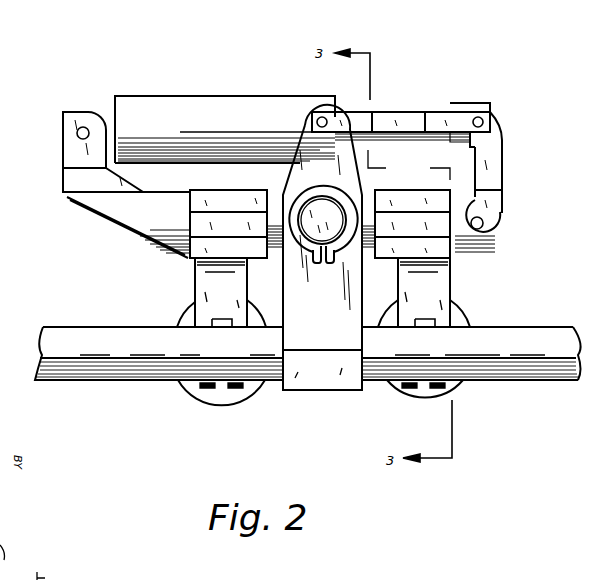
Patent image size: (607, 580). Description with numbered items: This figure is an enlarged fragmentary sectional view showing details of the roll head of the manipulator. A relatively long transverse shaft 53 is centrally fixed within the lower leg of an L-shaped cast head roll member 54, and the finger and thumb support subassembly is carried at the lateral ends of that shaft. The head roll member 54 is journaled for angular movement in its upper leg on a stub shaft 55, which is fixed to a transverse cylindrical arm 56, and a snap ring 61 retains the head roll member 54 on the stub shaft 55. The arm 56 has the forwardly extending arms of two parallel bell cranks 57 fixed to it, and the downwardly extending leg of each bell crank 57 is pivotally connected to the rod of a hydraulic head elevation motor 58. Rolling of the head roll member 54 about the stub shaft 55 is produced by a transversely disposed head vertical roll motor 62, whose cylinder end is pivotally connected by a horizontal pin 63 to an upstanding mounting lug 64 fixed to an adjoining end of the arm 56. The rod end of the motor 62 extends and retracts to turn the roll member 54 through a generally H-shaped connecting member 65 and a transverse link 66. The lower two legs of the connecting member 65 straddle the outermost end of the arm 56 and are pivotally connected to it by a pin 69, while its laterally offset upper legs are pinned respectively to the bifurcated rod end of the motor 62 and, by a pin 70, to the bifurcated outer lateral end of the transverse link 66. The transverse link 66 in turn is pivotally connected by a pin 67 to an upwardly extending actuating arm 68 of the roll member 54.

The transverse shaft 53 is at (76, 330).
The head roll member 54 is at (325, 330).
The stub shaft 55 is at (315, 208).
The transverse cylindrical arm 56 is at (370, 204).
The bell crank 57 is at (233, 292).
The hydraulic head elevation motor 58 is at (178, 325).
The snap ring 61 is at (340, 246).
The head vertical roll motor 62 is at (226, 118).
The horizontal pin 63 is at (84, 128).
The upstanding mounting lug 64 is at (72, 130).
The H-shaped connecting member 65 is at (497, 178).
The transverse link 66 is at (392, 115).
The pin 67 is at (319, 118).
The actuating arm 68 is at (334, 165).
The pin 69 is at (484, 224).
The pin 70 is at (480, 117).